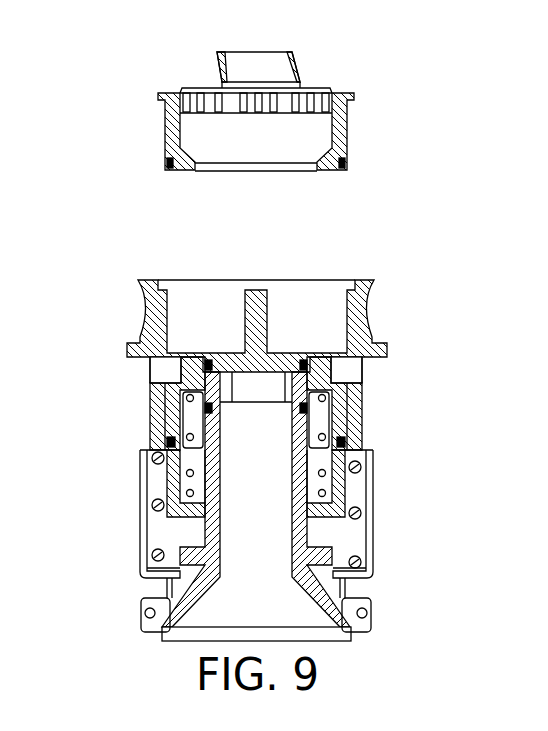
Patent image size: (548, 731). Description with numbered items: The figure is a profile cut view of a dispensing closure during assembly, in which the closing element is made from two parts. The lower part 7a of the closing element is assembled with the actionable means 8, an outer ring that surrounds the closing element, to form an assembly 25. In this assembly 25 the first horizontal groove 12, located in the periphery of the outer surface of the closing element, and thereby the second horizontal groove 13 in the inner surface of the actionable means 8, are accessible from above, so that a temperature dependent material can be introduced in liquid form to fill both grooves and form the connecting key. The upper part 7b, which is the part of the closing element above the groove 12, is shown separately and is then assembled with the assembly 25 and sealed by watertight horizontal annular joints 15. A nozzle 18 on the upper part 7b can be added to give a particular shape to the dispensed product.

The nozzle 18 is at (267, 58).
The upper part 7b is at (348, 128).
The horizontal annular joints 15 is at (165, 162).
The actionable means 8 is at (362, 306).
The first horizontal groove 12 is at (362, 377).
The second horizontal groove 13 is at (148, 364).
The lower part 7a is at (357, 403).
The assembly 25 is at (140, 427).